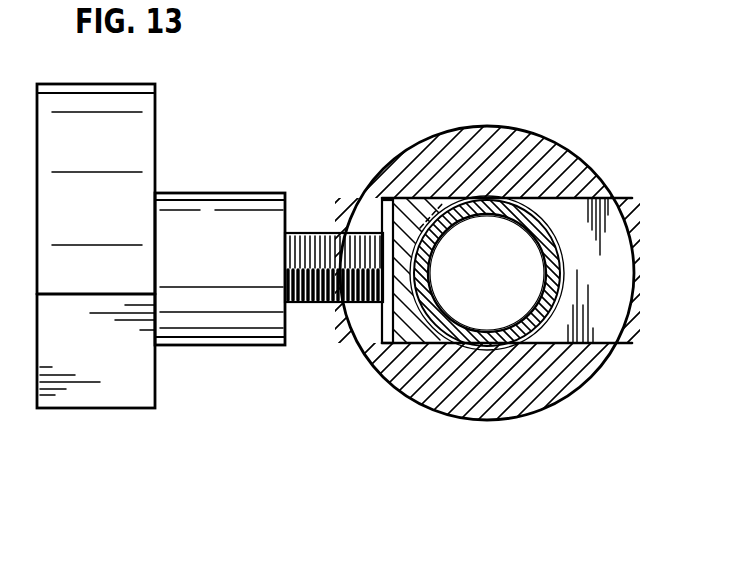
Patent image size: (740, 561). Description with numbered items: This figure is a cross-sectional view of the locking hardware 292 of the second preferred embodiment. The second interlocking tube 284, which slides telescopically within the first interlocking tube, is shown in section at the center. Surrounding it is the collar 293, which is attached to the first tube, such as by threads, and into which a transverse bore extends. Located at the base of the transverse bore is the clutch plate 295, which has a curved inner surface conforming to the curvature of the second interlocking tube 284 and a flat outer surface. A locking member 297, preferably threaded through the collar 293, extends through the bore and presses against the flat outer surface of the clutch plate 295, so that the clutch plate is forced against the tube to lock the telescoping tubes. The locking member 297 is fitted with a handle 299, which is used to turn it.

The second interlocking tube 284 is at (570, 204).
The locking hardware 292 is at (378, 295).
The collar 293 is at (520, 140).
The clutch plate 295 is at (410, 192).
The locking member 297 is at (316, 231).
The handle 299 is at (142, 148).